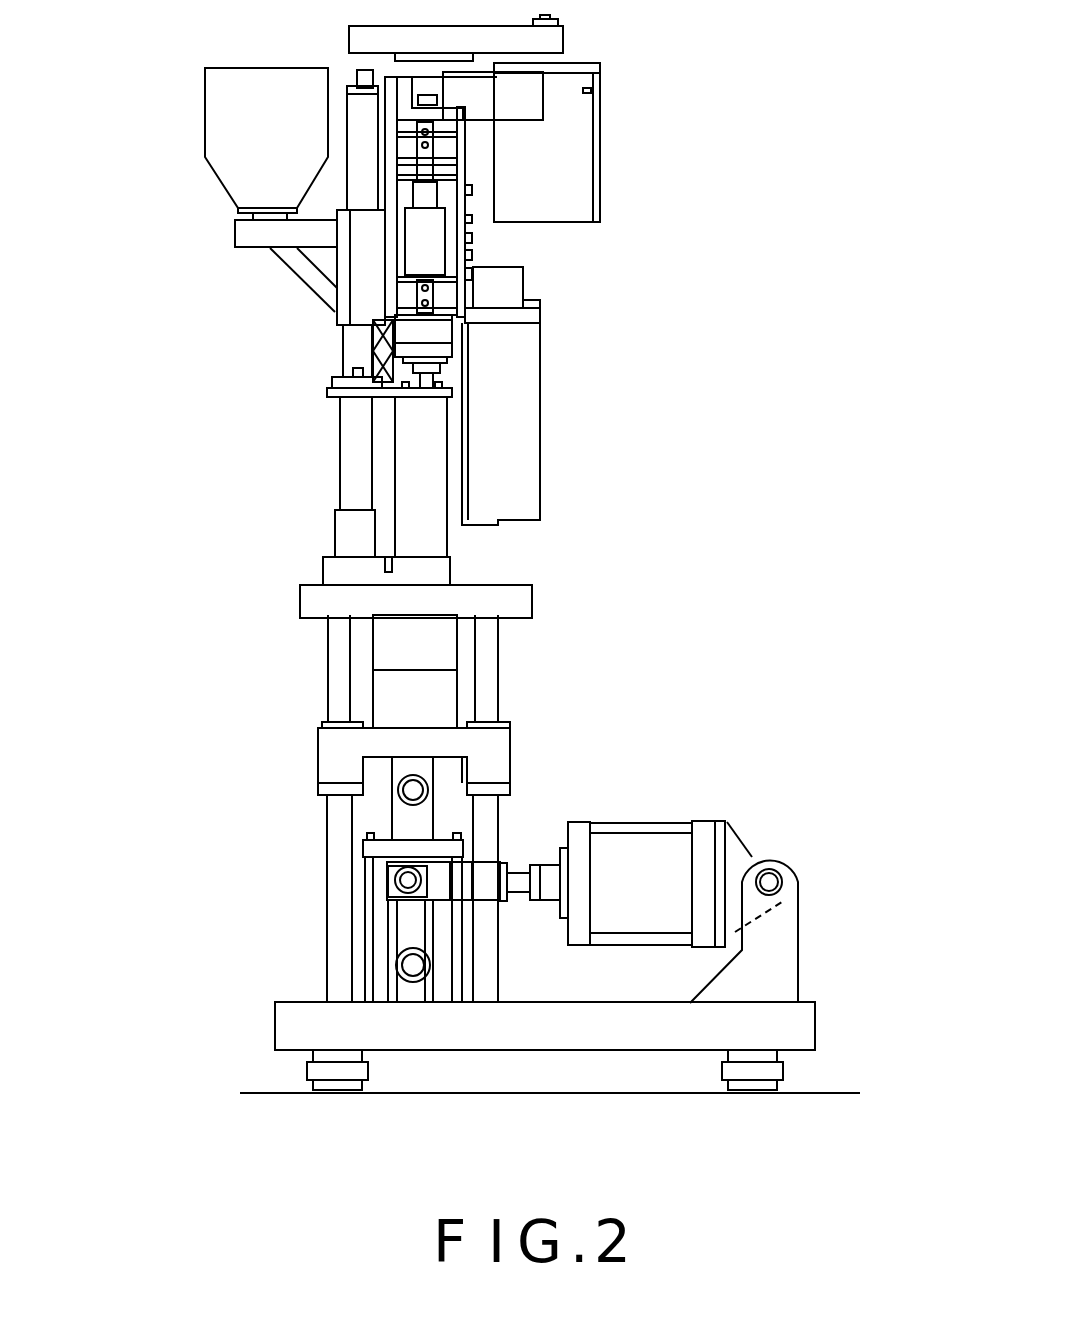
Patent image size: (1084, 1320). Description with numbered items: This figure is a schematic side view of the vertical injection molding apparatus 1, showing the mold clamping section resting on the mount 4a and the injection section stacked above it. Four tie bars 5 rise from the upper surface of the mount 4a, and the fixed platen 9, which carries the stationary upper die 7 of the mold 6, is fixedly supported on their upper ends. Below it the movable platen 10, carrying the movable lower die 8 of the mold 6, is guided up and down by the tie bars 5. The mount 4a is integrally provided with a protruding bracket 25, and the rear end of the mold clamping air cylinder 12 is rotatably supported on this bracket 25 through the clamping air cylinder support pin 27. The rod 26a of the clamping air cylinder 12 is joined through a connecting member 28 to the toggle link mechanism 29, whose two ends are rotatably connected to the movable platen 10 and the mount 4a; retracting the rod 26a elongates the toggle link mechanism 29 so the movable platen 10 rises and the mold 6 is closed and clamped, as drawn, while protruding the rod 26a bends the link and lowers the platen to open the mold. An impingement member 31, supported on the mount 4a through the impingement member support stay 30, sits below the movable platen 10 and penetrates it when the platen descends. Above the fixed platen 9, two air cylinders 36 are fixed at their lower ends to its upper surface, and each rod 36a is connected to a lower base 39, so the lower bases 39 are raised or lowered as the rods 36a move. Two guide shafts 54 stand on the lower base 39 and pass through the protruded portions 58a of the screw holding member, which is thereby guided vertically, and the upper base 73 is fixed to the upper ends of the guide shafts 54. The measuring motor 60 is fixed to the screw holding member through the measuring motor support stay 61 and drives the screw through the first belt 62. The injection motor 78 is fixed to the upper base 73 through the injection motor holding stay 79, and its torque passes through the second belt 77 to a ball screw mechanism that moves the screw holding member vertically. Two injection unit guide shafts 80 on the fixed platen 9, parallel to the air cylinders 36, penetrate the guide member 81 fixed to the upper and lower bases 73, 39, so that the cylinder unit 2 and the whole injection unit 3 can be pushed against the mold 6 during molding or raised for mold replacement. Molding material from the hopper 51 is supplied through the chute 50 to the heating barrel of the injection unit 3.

The press machine 1 is at (312, 815).
The cylinder unit 2 is at (452, 436).
The injection unit 3 is at (534, 287).
The mount 4a is at (798, 1035).
The tie bars 5 is at (332, 640).
The mold 6 is at (372, 660).
The stationary die 7 is at (437, 632).
The movable die 8 is at (437, 697).
The fixed platen 9 is at (512, 600).
The movable platen 10 is at (486, 745).
The mold clamping air cylinder 12 is at (655, 857).
The bracket 25 is at (782, 945).
The rod 26a is at (520, 888).
The clamping air cylinder support pin 27 is at (772, 870).
The connecting member 28 is at (483, 890).
The toggle link mechanism 29 is at (400, 915).
The impingement member support stay 30 is at (460, 852).
The impingement member 31 is at (427, 790).
The air cylinders 36 is at (435, 540).
The rod 36a is at (440, 380).
The lower base 39 is at (452, 345).
The chute 50 is at (297, 265).
The hopper 51 is at (232, 150).
The guide shafts 54 is at (460, 195).
The protruded portions 58a is at (432, 246).
The measuring motor 60 is at (518, 468).
The measuring motor support stay 61 is at (536, 318).
The first belt 62 is at (405, 297).
The upper base 73 is at (460, 145).
The second belt 77 is at (562, 35).
The injection motor 78 is at (585, 132).
The injection motor holding stay 79 is at (530, 107).
The injection unit guide shafts 80 is at (356, 443).
The guide member 81 is at (362, 283).